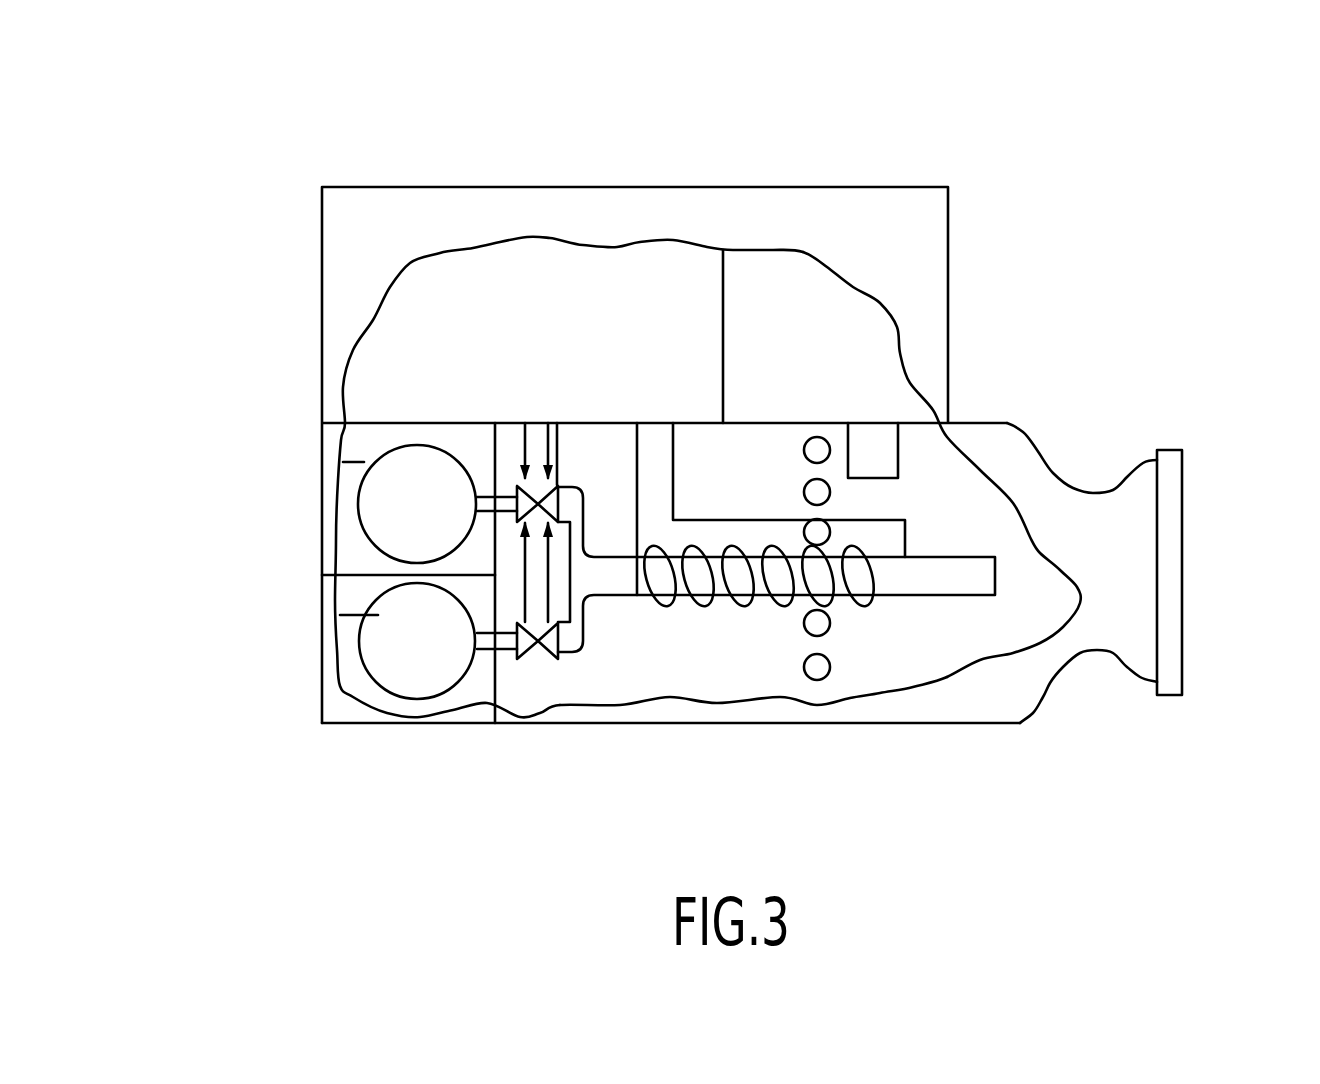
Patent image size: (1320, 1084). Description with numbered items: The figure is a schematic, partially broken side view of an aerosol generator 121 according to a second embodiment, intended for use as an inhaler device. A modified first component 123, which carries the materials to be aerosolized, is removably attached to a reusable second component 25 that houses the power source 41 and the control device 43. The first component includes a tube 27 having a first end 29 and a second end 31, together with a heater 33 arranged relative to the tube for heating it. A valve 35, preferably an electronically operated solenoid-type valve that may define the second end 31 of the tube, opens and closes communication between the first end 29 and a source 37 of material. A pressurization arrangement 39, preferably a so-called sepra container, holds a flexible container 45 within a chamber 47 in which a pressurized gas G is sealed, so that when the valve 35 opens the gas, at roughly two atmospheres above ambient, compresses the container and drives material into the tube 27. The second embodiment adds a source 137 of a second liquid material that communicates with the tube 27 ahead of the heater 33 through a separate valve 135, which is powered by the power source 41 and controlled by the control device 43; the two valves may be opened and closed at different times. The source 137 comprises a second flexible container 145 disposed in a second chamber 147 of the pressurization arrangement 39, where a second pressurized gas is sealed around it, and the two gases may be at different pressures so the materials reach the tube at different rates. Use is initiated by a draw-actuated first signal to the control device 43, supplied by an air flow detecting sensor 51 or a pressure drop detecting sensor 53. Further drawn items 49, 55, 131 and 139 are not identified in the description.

The aerosol generator 121 is at (822, 132).
The second component 25 is at (940, 178).
The tube 27 is at (942, 606).
The first end of tube 29 is at (997, 578).
The second end of tube 31 is at (481, 492).
The heater 33 is at (770, 605).
The valve 35 is at (558, 487).
The source of material 37 is at (338, 474).
The pressurization arrangement 39 is at (325, 565).
The power source 41 is at (597, 341).
The control device 43 is at (832, 357).
The flexible container 45 is at (348, 522).
The chamber 47 is at (343, 543).
The flexible membrane 49 is at (1005, 698).
The air flow detecting sensor 51 is at (892, 452).
The pressure drop detecting sensor 53 is at (1183, 576).
The vent holes 55 is at (817, 680).
The modified first component 123 is at (1025, 413).
The second gas passage 131 is at (479, 693).
The separate valve 135 is at (560, 652).
The source of second material 137 is at (330, 647).
The lower membrane portion 139 is at (375, 726).
The second flexible container 145 is at (422, 700).
The second chamber 147 is at (357, 687).